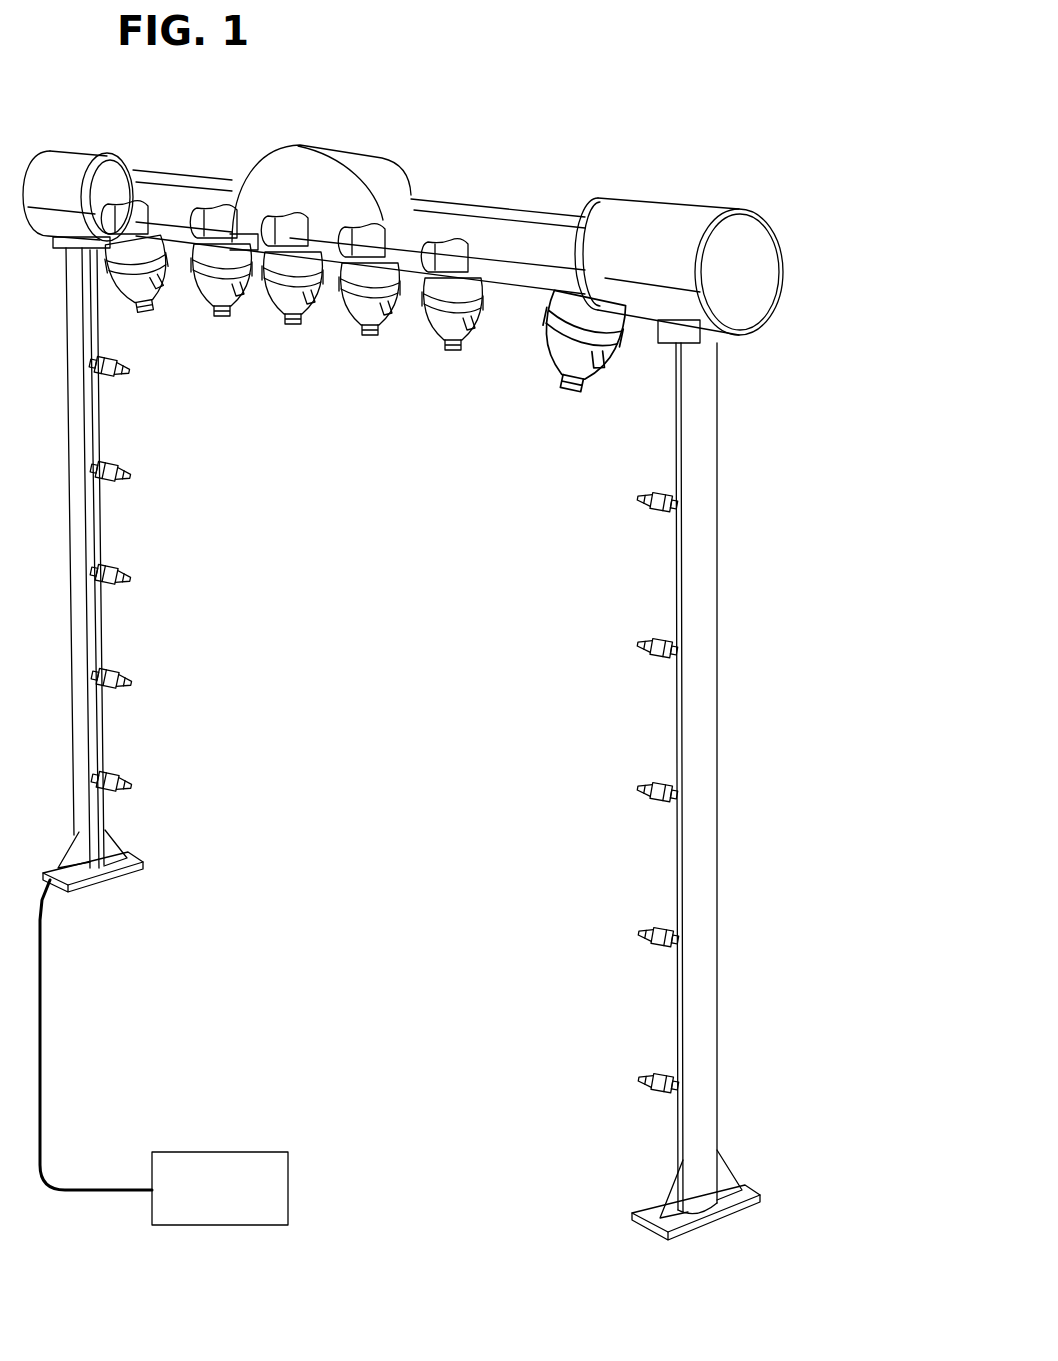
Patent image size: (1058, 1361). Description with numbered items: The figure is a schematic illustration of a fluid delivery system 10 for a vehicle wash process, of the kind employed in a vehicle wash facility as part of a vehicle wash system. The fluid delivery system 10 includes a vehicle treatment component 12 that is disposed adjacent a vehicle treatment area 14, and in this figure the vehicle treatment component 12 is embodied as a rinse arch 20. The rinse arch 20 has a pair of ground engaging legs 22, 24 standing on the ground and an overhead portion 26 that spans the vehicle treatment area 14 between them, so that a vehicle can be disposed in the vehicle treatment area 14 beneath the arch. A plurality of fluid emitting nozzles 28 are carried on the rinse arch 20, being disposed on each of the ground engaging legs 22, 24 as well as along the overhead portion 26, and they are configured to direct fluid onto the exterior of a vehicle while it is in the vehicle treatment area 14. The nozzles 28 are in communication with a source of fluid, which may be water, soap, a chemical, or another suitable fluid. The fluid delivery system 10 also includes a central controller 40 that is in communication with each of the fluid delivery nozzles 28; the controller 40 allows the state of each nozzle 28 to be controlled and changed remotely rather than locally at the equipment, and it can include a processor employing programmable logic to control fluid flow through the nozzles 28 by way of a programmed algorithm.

The fluid delivery system 10 is at (840, 288).
The vehicle treatment component 12 is at (780, 119).
The vehicle treatment area 14 is at (371, 928).
The rinse arch 20 is at (411, 194).
The ground engaging leg 22 is at (712, 558).
The ground engaging leg 24 is at (72, 520).
The overhead portion 26 is at (483, 208).
The fluid emitting nozzle 28 is at (460, 352).
The central controller 40 is at (233, 1200).